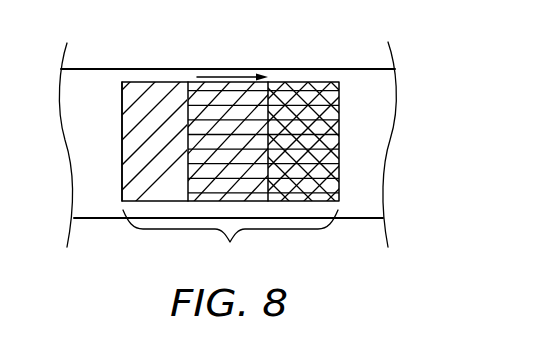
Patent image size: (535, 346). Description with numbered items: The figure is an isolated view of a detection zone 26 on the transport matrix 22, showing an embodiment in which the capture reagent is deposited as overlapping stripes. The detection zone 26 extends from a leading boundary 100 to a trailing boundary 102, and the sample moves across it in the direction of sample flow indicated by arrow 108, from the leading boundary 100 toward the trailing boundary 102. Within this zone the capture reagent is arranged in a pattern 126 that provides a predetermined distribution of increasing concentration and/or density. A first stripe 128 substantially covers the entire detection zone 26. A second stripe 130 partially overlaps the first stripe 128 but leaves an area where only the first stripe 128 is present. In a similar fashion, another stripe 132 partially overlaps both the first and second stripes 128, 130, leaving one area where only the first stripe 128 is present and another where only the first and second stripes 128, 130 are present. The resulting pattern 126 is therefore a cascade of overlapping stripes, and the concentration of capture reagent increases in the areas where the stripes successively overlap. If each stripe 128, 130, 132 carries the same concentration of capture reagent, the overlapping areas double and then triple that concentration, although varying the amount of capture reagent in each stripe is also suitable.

The transport matrix 22 is at (88, 87).
The detection zone 26 is at (135, 172).
The leading boundary 100 is at (122, 140).
The trailing boundary 102 is at (340, 107).
The arrow indicating direction of sample flow 108 is at (226, 75).
The pattern 126 is at (230, 240).
The first stripe 128 is at (155, 97).
The second stripe 130 is at (227, 102).
The another stripe 132 is at (307, 93).